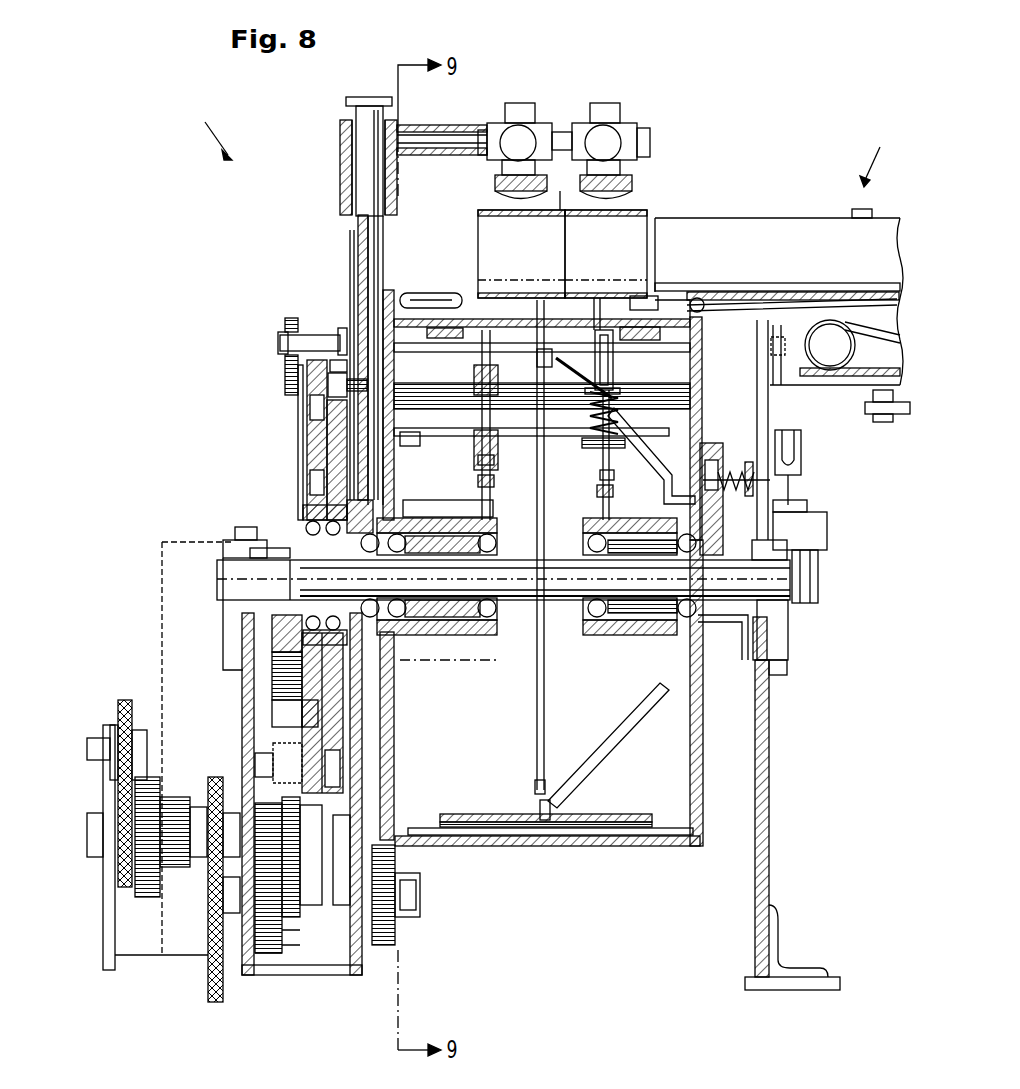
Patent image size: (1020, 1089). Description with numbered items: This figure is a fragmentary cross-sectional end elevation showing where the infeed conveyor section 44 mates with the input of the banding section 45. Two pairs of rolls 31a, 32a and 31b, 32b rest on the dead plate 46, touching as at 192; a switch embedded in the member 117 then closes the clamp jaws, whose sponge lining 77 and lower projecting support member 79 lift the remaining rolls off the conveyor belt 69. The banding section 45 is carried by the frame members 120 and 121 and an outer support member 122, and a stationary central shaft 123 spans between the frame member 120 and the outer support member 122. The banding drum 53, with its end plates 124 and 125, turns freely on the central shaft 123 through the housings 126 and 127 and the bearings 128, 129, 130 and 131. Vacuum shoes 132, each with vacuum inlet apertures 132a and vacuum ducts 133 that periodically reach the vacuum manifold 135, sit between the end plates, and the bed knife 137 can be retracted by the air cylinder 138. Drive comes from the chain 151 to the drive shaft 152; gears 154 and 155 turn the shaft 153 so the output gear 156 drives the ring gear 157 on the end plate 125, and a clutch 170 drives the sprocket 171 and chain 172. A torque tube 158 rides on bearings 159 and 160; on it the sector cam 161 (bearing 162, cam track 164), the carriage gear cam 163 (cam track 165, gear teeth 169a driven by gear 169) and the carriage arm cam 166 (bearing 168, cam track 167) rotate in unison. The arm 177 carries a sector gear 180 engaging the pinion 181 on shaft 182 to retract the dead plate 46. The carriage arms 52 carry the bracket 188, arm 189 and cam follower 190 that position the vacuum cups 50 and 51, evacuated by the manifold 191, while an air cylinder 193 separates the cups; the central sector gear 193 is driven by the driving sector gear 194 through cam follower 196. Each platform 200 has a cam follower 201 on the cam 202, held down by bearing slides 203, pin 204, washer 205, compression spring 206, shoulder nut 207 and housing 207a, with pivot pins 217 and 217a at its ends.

The infeed conveyor section 44 is at (877, 154).
The banding section 45 is at (203, 132).
The dead plate 46 is at (636, 300).
The first pair of vacuum cups 50 is at (492, 192).
The second pair of vacuum cups 51 is at (628, 194).
The carriage arms 52 is at (355, 220).
The banding drum 53 is at (700, 846).
The conveyor belt 69 is at (763, 310).
The sponge lining 77 is at (775, 232).
The lower projecting support member 79 is at (706, 285).
The member 117 is at (450, 302).
The frame member 120 is at (770, 770).
The frame member 121 is at (358, 975).
The outer support member 122 is at (247, 975).
The central shaft 123 is at (588, 584).
The end plate 124 is at (697, 743).
The end plate 125 is at (394, 703).
The housing 126 is at (630, 636).
The housing 127 is at (470, 643).
The bearing 128 is at (673, 613).
The bearing 129 is at (617, 612).
The bearing 130 is at (494, 555).
The bearing 131 is at (395, 614).
The vacuum shoe 132 is at (500, 840).
The vacuum inlet apertures 132a is at (435, 843).
The vacuum ducts 133 is at (653, 487).
The vacuum manifold 135 is at (780, 453).
The bed knife 137 is at (412, 446).
The air cylinder 138 is at (806, 573).
The chain 151 is at (208, 997).
The drive shaft 152 is at (392, 802).
The shaft 153 is at (337, 950).
The gear 154 is at (255, 805).
The gear 155 is at (270, 953).
The output gear 156 is at (397, 938).
The ring gear 157 is at (397, 847).
The torque tube 158 is at (385, 514).
The bearing 159 is at (312, 540).
The bearing 160 is at (370, 548).
The sector cam 161 is at (322, 500).
The bearing 162 is at (265, 536).
The carriage gear cam 163 is at (312, 450).
The cam track 164 is at (320, 474).
The cam track 165 is at (318, 425).
The carriage arm cam 166 is at (338, 360).
The cam track 167 is at (322, 352).
The bearing 168 is at (330, 520).
The gear 169 is at (313, 900).
The gear teeth 169a is at (330, 372).
The clutch 170 is at (167, 880).
The sprocket 171 is at (133, 887).
The chain 172 is at (120, 780).
The arm 177 is at (298, 450).
The sector gear 180 is at (292, 367).
The pinion 181 is at (285, 327).
The shaft 182 is at (346, 350).
The bracket 188 is at (340, 152).
The arm 189 is at (364, 278).
The cam follower 190 is at (328, 385).
The manifold 191 is at (516, 113).
The touching point of roll pairs 192 is at (560, 208).
The air cylinder / central sector gear 193 is at (418, 128).
The driving sector gear 194 is at (277, 697).
The cam follower 196 is at (305, 718).
The platform 200 is at (596, 310).
The cam follower 201 is at (536, 350).
The cam 202 is at (543, 687).
The bearing slides 203 is at (485, 478).
The pin 204 is at (470, 398).
The washer 205 is at (458, 430).
The compression spring 206 is at (505, 425).
The shoulder nut 207 is at (490, 432).
The housing 207a is at (478, 372).
The pivot pin 217 is at (430, 310).
The pivot pin 217a is at (688, 283).
The roll 31a is at (483, 240).
The roll 32a is at (478, 215).
The roll 31b is at (672, 232).
The roll 32b is at (630, 222).